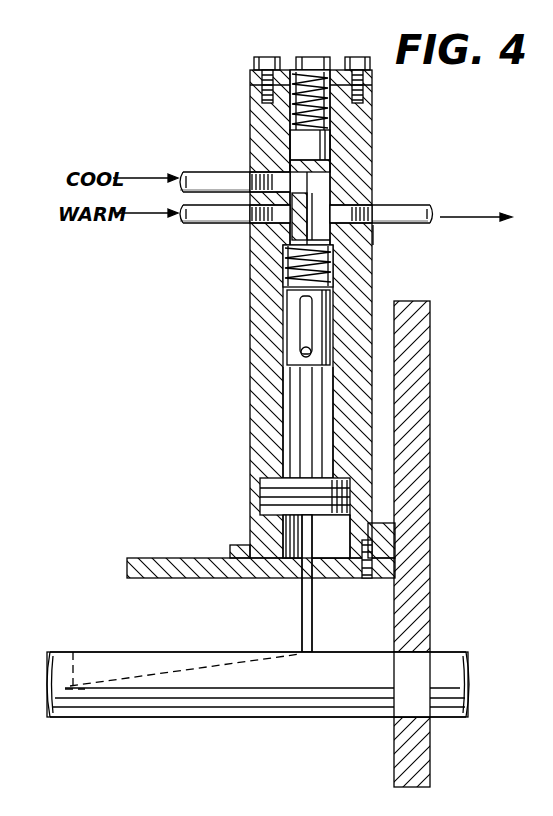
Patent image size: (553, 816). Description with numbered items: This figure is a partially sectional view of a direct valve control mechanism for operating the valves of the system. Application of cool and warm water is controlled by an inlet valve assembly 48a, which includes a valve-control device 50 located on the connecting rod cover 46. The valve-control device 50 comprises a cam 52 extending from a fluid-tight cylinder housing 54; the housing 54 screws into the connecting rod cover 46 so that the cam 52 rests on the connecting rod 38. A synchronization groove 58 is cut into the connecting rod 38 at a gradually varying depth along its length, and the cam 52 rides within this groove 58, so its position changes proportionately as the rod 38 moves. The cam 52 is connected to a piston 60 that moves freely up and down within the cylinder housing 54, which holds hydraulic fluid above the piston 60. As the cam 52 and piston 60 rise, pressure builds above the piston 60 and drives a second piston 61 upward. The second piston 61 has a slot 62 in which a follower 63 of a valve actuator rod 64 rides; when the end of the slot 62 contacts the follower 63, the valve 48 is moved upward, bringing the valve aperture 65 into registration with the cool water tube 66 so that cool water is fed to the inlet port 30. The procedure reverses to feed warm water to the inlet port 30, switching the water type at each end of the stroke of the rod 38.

The inlet port 30 is at (405, 212).
The connecting rod 38 is at (258, 692).
The connecting rod cover 46 is at (160, 558).
The valve 48 is at (325, 146).
The inlet valve assembly 48a is at (384, 232).
The valve-control device 50 is at (252, 471).
The cam 52 is at (302, 648).
The fluid-tight cylinder housing 54 is at (270, 414).
The synchronization groove 58 is at (110, 663).
The piston 60 is at (282, 498).
The second piston 61 is at (295, 320).
The slot 62 is at (298, 294).
The follower 63 is at (300, 354).
The valve actuator rod 64 is at (290, 266).
The valve aperture 65 is at (308, 185).
The cool water tube 66 is at (215, 183).